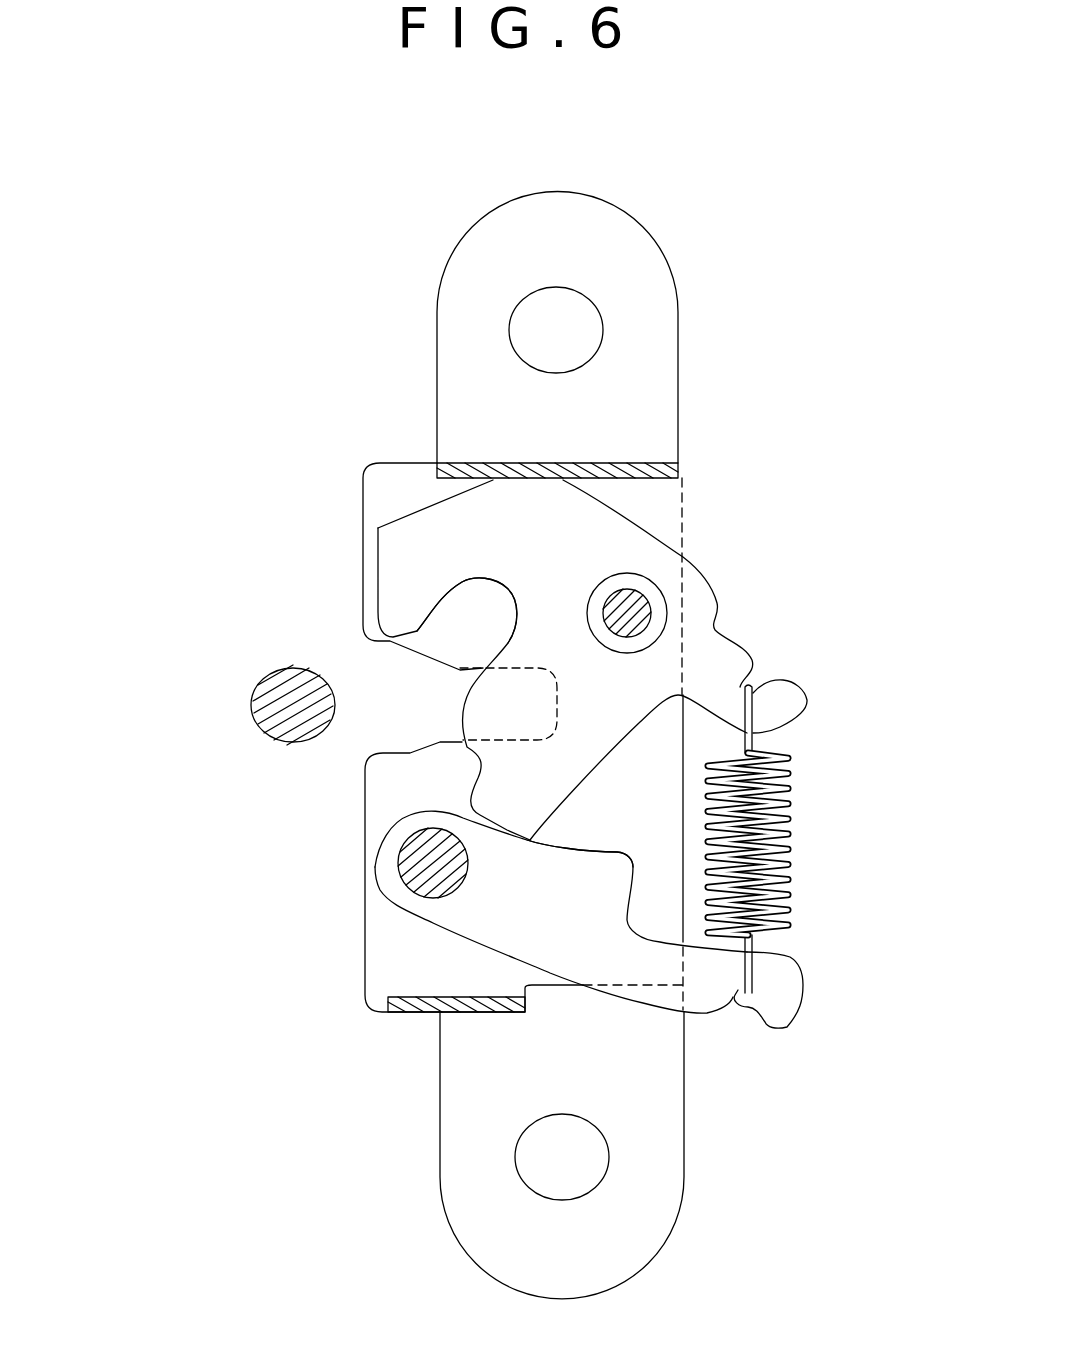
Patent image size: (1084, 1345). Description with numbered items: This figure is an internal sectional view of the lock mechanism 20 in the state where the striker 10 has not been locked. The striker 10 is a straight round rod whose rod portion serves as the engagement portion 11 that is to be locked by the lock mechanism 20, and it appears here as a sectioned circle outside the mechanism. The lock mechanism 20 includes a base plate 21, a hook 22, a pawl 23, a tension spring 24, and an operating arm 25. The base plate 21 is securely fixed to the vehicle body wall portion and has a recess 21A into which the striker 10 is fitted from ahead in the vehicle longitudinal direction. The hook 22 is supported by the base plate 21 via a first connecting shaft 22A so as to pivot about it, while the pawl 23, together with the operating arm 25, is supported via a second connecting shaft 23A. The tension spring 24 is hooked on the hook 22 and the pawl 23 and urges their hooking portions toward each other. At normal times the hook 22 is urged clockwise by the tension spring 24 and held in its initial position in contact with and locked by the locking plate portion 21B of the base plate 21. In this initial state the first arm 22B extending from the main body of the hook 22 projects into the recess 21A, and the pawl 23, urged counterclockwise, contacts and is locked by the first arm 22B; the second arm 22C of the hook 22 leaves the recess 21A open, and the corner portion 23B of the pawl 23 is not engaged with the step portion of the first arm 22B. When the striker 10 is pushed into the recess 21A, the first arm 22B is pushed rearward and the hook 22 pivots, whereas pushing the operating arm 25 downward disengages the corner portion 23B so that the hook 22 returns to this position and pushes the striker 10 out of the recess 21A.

The striker 10 is at (213, 705).
The engagement portion 11 is at (253, 698).
The lock mechanism 20 is at (311, 173).
The base plate 21 is at (451, 432).
The recess 21A is at (390, 752).
The locking plate portion 21B is at (468, 472).
The hook 22 is at (458, 506).
The first connecting shaft 22A is at (637, 607).
The first arm 22B is at (482, 715).
The second arm 22C is at (400, 610).
The pawl 23 is at (544, 957).
The second connecting shaft 23A is at (433, 863).
The corner portion 23B is at (615, 868).
The tension spring 24 is at (802, 793).
The operating arm 25 is at (715, 1000).